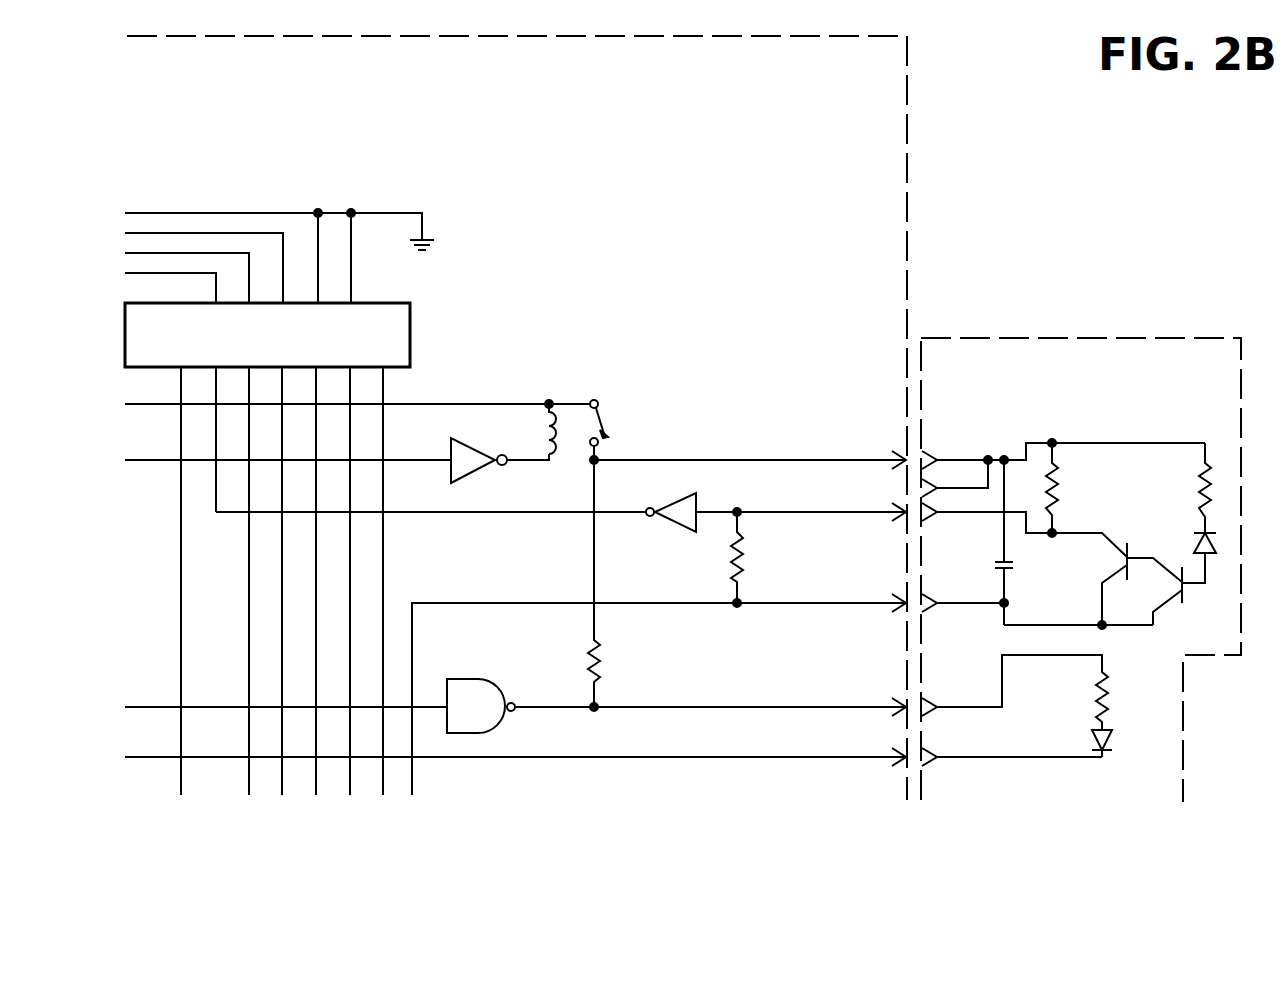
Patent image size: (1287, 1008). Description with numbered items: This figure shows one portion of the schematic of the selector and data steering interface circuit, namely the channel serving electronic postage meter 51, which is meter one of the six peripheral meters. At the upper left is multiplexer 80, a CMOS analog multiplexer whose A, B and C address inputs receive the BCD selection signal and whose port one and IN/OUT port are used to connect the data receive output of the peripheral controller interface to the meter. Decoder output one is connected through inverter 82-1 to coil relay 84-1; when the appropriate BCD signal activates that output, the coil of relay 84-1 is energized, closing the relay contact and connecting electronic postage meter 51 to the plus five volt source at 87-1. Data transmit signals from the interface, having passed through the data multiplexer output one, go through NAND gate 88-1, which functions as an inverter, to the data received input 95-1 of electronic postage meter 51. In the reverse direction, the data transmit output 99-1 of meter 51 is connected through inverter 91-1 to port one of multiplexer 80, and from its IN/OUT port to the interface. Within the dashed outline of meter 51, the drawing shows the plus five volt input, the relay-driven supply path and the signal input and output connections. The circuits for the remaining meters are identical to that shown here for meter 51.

The multiplexer 80 is at (279, 502).
The inverter 82-1 is at (468, 482).
The coil relay 84-1 is at (601, 400).
The plus 5 volt source 87-1 is at (887, 461).
The NAND gate 88-1 is at (496, 682).
The inverter 91-1 is at (690, 498).
The data received input 95-1 is at (880, 705).
The data transmit output 99-1 is at (888, 512).
The electronic postage meter 51 is at (1240, 418).